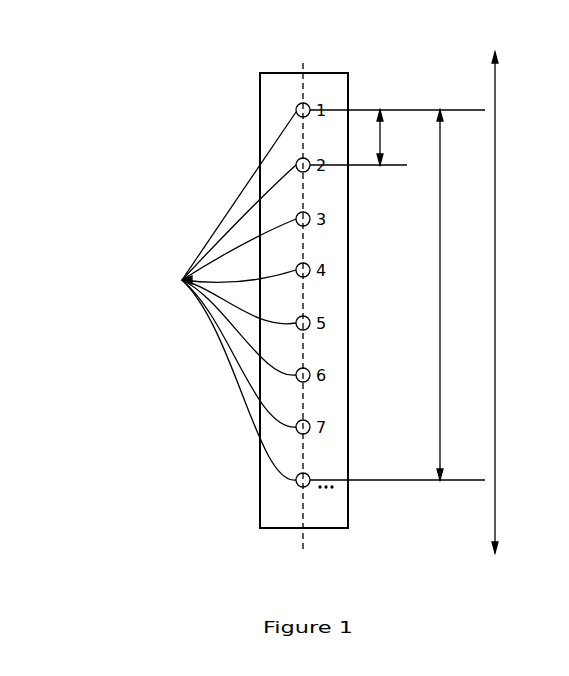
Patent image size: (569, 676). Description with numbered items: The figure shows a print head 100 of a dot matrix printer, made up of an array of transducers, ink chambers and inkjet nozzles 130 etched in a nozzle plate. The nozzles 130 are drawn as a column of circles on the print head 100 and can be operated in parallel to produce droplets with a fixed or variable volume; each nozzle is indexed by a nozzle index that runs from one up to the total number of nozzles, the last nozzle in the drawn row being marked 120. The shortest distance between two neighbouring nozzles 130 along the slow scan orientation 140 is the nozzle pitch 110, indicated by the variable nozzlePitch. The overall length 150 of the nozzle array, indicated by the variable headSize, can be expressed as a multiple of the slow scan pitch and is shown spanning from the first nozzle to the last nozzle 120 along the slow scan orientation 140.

The print head 100 is at (318, 73).
The nozzle pitch 110 is at (397, 137).
The last array element 120 is at (311, 477).
The nozzles 130 is at (220, 296).
The slow scan orientation 140 is at (496, 348).
The length 150 is at (397, 295).